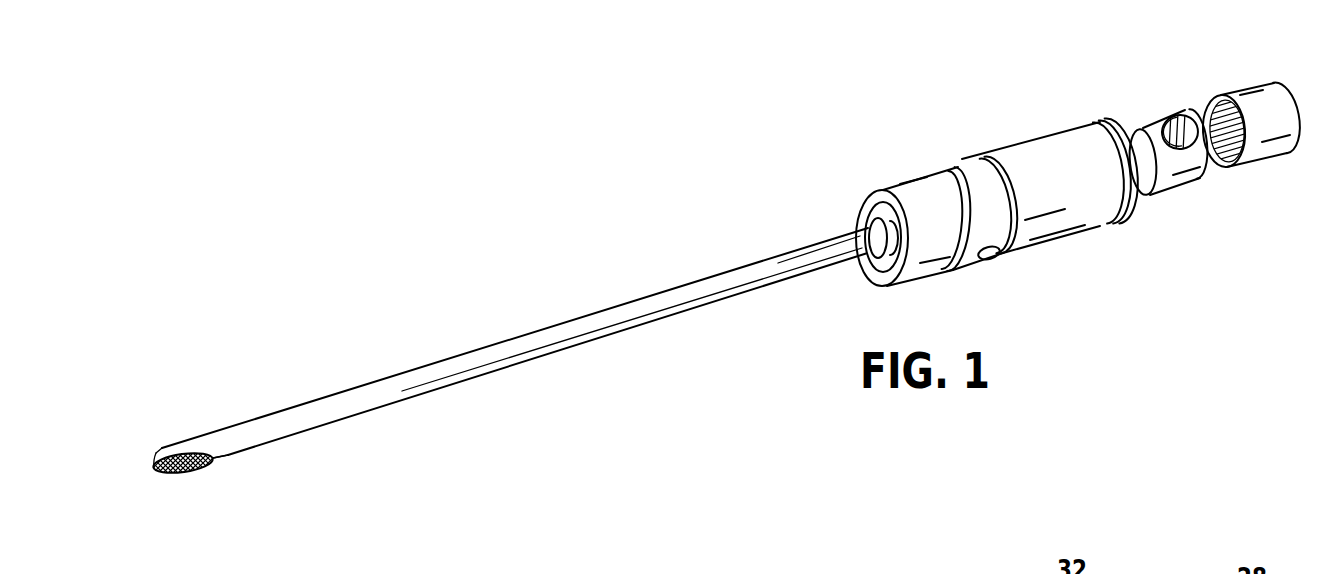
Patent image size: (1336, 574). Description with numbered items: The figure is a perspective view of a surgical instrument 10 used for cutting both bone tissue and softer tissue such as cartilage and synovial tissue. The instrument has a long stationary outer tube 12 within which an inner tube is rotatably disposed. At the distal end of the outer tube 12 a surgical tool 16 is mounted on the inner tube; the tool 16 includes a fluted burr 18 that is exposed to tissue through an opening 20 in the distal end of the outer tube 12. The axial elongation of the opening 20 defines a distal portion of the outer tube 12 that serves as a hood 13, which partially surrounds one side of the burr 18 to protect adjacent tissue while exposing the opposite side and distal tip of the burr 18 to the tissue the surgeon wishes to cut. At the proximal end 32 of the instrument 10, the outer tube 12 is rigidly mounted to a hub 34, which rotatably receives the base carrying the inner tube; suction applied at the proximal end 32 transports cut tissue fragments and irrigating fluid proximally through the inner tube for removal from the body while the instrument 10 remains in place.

The surgical instrument 10 is at (689, 254).
The stationary outer tube 12 is at (571, 318).
The hood 13 is at (178, 449).
The surgical tool 16 is at (150, 486).
The fluted burr 18 is at (177, 474).
The opening 20 is at (226, 470).
The proximal end 32 is at (1034, 108).
The hub 34 is at (987, 155).